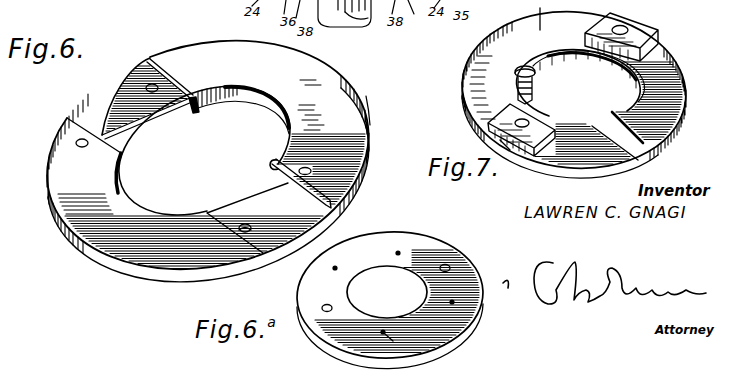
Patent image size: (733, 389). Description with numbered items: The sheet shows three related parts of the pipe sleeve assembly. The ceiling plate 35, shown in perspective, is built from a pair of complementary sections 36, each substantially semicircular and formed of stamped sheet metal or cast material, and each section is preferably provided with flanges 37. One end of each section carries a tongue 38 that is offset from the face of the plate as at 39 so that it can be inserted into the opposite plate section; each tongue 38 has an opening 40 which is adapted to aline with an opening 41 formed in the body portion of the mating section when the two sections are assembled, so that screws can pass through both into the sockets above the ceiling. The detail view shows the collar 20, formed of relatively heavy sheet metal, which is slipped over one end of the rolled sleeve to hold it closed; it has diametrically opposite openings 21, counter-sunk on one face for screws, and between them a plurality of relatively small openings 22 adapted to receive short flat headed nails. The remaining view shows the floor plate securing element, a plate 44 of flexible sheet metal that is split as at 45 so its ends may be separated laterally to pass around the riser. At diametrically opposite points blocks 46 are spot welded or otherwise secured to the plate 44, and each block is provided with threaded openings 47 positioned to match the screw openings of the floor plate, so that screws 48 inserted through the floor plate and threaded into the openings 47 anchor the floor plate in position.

In FIG. 6A, the collar 20 is at (468, 291).
In FIG. 6A, the openings 21 is at (449, 266).
In FIG. 6A, the relatively small openings 22 is at (396, 253).
In FIG. 6, the ceiling plate 35 is at (371, 94).
In FIG. 6, the complementary sections 36 is at (56, 177).
In FIG. 6, the flanges 37 is at (268, 172).
In FIG. 6, the tongue 38 is at (127, 97).
In FIG. 6, the offset 39 is at (167, 58).
In FIG. 6, the opening 40 is at (146, 82).
In FIG. 6, the openings 41 is at (76, 142).
In FIG. 7, the plate 44 is at (540, 15).
In FIG. 7, the split 45 is at (662, 126).
In FIG. 7, the blocks 46 is at (631, 30).
In FIG. 7, the threaded openings 47 is at (510, 153).
In FIG. 7, the screws 48 is at (534, 88).